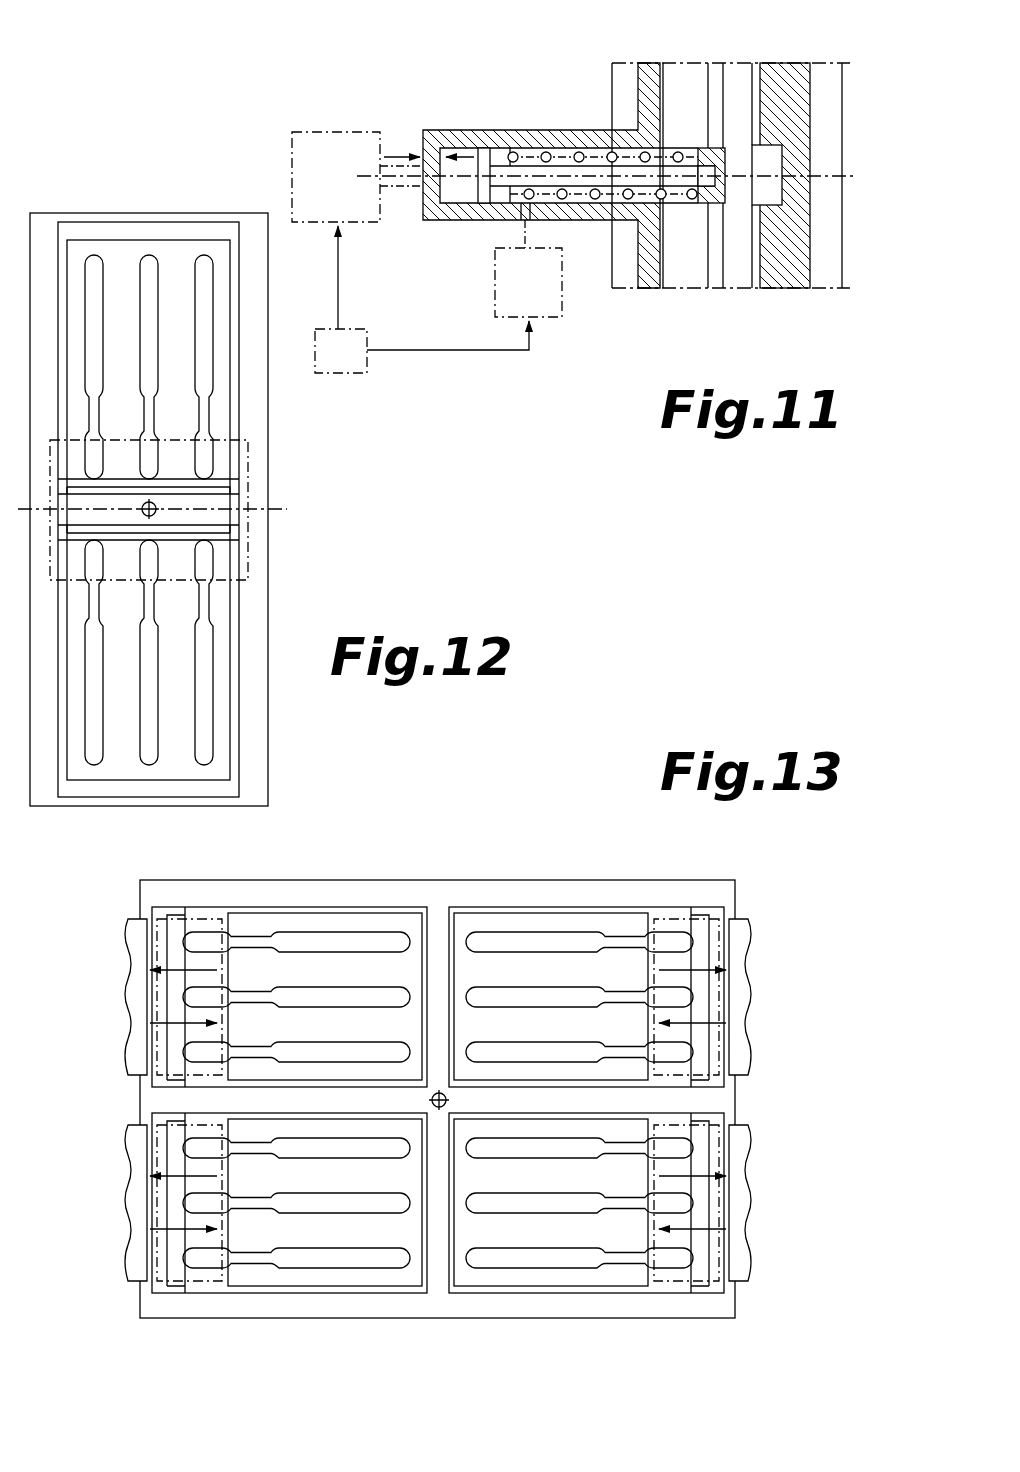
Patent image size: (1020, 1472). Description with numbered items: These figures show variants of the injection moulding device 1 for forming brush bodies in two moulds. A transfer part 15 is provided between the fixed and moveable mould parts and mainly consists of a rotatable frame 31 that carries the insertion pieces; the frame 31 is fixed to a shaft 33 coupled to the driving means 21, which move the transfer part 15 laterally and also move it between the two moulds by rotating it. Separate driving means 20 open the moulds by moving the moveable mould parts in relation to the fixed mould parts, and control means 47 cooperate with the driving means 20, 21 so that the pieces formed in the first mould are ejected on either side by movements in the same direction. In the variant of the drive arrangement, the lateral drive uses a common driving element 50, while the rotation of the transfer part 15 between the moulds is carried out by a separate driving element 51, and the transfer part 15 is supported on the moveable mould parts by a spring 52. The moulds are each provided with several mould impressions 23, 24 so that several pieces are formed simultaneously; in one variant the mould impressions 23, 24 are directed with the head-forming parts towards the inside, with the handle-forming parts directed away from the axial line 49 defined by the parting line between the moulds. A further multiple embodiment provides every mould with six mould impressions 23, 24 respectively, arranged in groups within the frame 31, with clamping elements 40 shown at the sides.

In FIG. 12, the device 1 is at (178, 183).
In FIG. 13, the device 1 is at (765, 852).
In FIG. 11, the transfer part 15 is at (728, 62).
In FIG. 12, the transfer part 15 is at (268, 773).
In FIG. 13, the transfer part 15 is at (172, 1318).
In FIG. 11, the driving means 20 is at (392, 118).
In FIG. 11, the driving means 21 is at (482, 283).
In FIG. 12, the mould impressions 23 is at (100, 668).
In FIG. 12, the mould impressions 24 is at (100, 373).
In FIG. 11, the rotatable frame 31 is at (707, 268).
In FIG. 12, the rotatable frame 31 is at (258, 722).
In FIG. 13, the rotatable frame 31 is at (529, 905).
In FIG. 12, the shaft 33 is at (156, 507).
In FIG. 13, the shaft 33 is at (440, 1092).
In FIG. 12, the clamp 40 is at (262, 552).
In FIG. 13, the clamp 40 is at (112, 1154).
In FIG. 11, the control means 47 is at (364, 374).
In FIG. 12, the axial line 49 is at (287, 509).
In FIG. 11, the common driving element 50 is at (318, 143).
In FIG. 11, the separate driving element 51 is at (550, 318).
In FIG. 11, the spring 52 is at (592, 155).